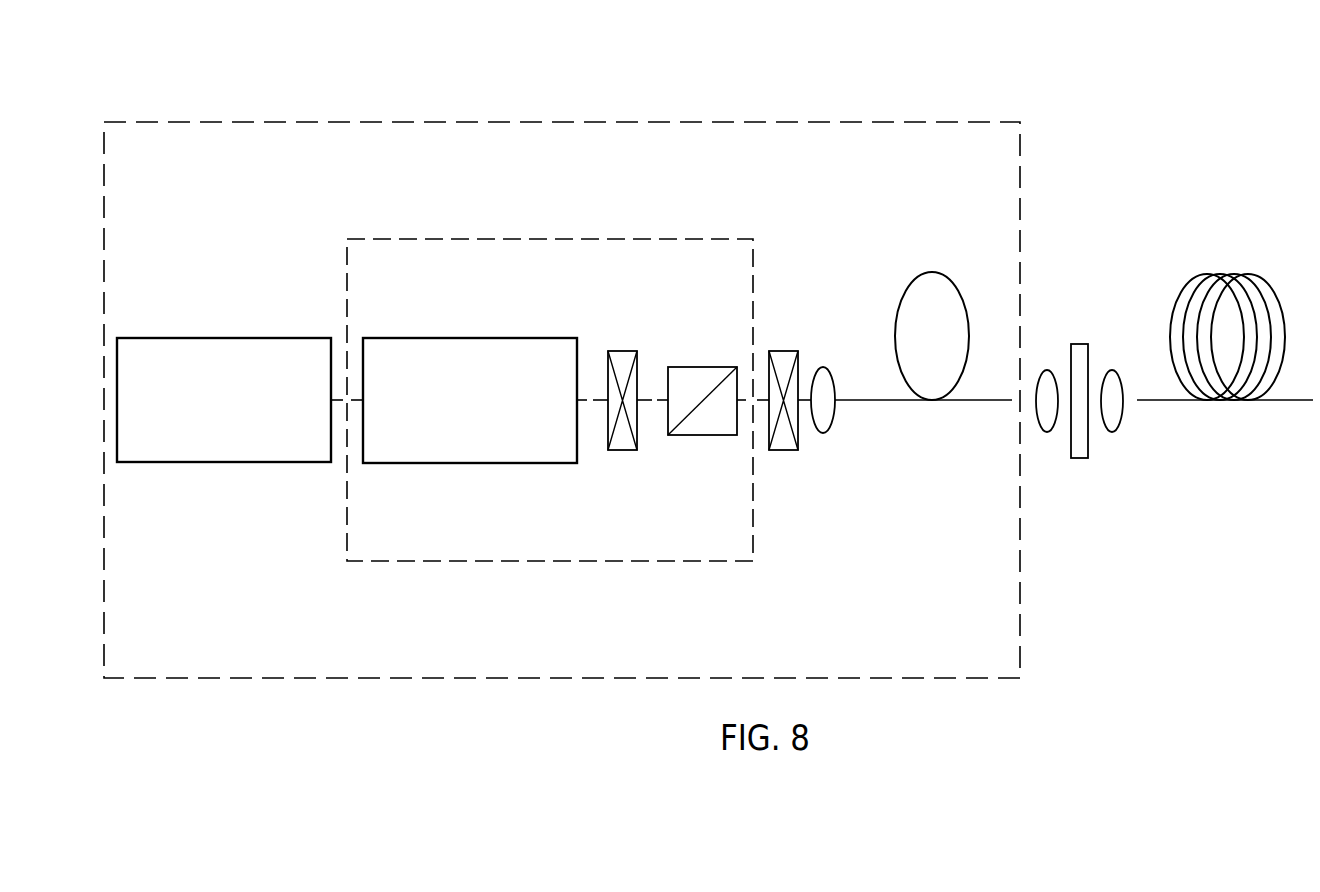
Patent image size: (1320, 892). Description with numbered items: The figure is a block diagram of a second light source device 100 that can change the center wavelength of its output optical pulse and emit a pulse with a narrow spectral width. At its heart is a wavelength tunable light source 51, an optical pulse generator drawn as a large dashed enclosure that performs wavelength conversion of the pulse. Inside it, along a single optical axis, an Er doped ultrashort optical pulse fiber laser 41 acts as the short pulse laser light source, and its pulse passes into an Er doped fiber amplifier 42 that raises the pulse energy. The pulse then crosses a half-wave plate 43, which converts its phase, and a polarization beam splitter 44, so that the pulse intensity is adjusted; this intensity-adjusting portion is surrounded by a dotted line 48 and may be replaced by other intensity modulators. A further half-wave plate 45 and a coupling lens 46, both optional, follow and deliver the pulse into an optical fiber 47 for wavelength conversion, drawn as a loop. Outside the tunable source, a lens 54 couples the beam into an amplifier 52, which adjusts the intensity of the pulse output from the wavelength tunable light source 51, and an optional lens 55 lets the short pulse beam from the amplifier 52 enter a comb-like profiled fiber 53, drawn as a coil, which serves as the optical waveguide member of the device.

The light source device 100 is at (1250, 98).
The wavelength tunable light source 51 is at (638, 122).
The dotted line 48 is at (559, 239).
The Er doped ultrashort optical pulse fiber laser 41 is at (237, 338).
The Er doped fiber amplifier 42 is at (465, 338).
The λ/2 wave plate 43 is at (637, 351).
The polarization beam splitter 44 is at (703, 367).
The λ/2 wave plate 45 is at (799, 351).
The coupling lens 46 is at (828, 371).
The optical fiber for wavelength conversion 47 is at (942, 274).
The amplifier 52 is at (1080, 344).
The comb-like profiled fiber 53 is at (1228, 275).
The lens 54 is at (1047, 370).
The lens 55 is at (1113, 370).